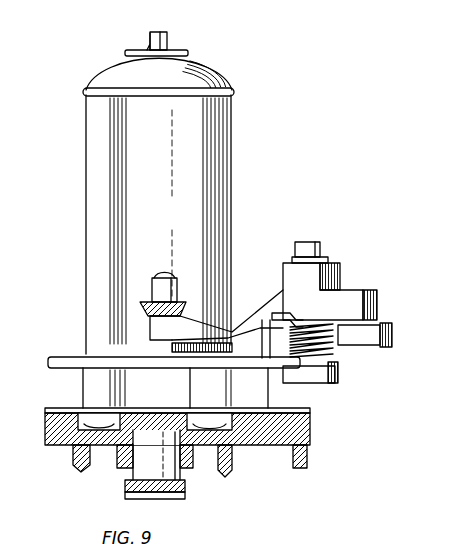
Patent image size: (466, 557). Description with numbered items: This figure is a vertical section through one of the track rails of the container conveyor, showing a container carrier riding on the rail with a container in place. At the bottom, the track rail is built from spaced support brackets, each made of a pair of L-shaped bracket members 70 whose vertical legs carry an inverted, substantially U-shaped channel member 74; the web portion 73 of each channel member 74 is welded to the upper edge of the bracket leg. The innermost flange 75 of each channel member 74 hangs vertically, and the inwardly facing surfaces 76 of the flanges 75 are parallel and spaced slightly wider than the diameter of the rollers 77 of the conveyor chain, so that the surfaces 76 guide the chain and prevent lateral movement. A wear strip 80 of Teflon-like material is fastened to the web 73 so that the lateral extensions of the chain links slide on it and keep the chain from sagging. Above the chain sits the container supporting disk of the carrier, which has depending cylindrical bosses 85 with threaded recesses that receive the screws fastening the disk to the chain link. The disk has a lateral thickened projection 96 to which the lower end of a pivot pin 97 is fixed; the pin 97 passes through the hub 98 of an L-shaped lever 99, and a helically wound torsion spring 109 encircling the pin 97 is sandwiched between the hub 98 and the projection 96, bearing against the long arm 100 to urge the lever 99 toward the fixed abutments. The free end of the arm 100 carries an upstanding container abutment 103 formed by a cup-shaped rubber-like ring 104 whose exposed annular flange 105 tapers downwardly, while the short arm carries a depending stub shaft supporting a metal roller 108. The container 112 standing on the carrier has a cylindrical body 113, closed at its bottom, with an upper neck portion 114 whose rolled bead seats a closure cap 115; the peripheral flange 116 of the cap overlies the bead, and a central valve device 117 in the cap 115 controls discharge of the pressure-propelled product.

The bracket member 70 is at (78, 466).
The web portion 73 is at (296, 448).
The channel member 74 is at (232, 446).
The innermost flange 75 is at (196, 462).
The inwardly facing surface 76 is at (128, 458).
The roller 77 is at (148, 480).
The wear strip 80 is at (50, 426).
The cylindrical boss 85 is at (100, 386).
The lateral thickened projection 96 is at (330, 380).
The pivot pin 97 is at (318, 248).
The hub 98 is at (338, 278).
The lever 99 is at (271, 288).
The arm 100 is at (236, 314).
The container abutment 103 is at (148, 288).
The cup-shaped ring 104 is at (150, 318).
The annular flange 105 is at (144, 306).
The metal roller 108 is at (388, 326).
The torsion spring 109 is at (336, 348).
The container 112 is at (235, 122).
The cylindrical body 113 is at (212, 164).
The upper neck portion 114 is at (216, 76).
The closure cap 115 is at (148, 50).
The peripheral flange 116 is at (190, 53).
The central valve device 117 is at (165, 40).